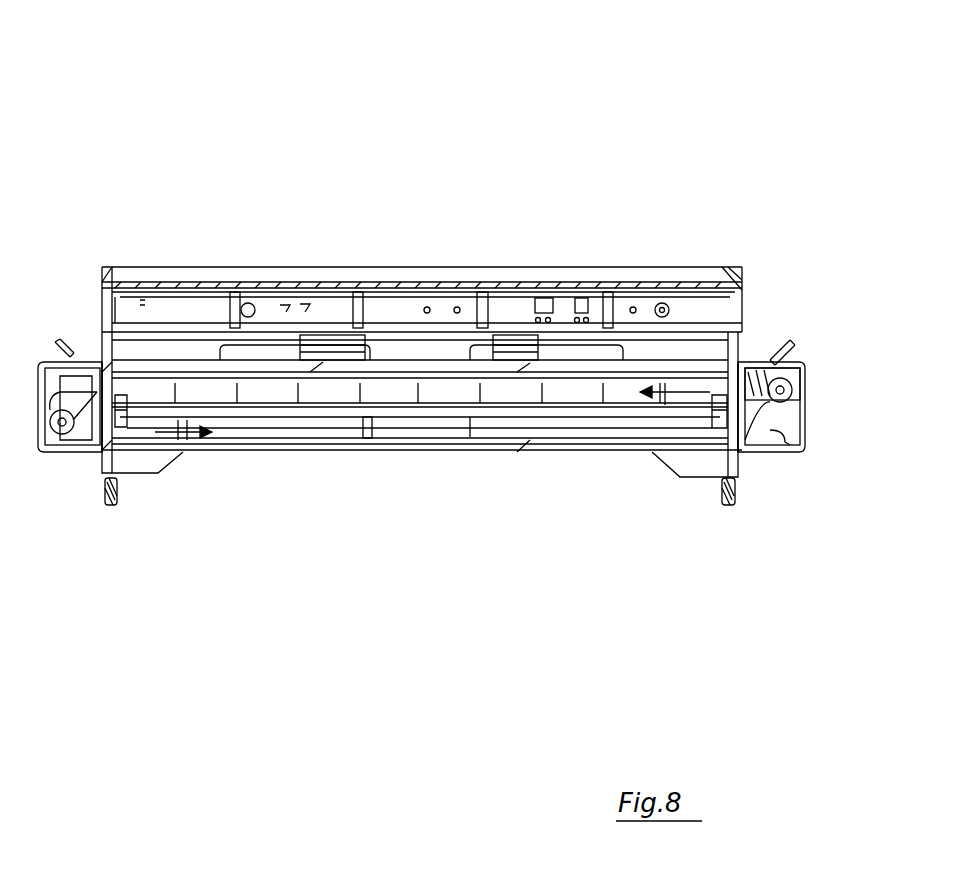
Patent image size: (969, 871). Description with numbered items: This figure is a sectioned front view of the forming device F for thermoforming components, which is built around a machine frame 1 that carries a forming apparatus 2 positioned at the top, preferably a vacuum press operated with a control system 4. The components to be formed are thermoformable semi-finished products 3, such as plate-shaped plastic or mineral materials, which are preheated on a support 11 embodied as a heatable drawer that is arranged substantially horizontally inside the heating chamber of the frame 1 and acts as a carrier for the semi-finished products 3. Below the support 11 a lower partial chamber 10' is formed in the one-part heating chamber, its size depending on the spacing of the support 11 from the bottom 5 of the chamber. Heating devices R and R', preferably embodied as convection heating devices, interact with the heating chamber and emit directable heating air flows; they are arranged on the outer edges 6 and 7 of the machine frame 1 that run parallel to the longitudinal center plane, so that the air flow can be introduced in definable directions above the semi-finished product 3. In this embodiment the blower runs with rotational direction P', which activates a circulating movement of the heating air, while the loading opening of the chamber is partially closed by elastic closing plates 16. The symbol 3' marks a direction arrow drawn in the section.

The forming device F is at (592, 73).
The machine frame 1 is at (113, 352).
The forming apparatus 2 is at (283, 292).
The semi-finished product 3 is at (422, 250).
The control system 4 is at (468, 300).
The bottom 5 is at (592, 450).
The outer edge 6 is at (97, 367).
The outer edge 7 is at (745, 362).
The support 11 is at (388, 413).
The elastic closing plate 16 is at (320, 393).
The lower partial chamber 10' is at (419, 483).
The direction arrow 3' is at (432, 461).
The rotational direction of the blower P' is at (419, 399).
The heating device R is at (70, 456).
The heating device R' is at (758, 463).